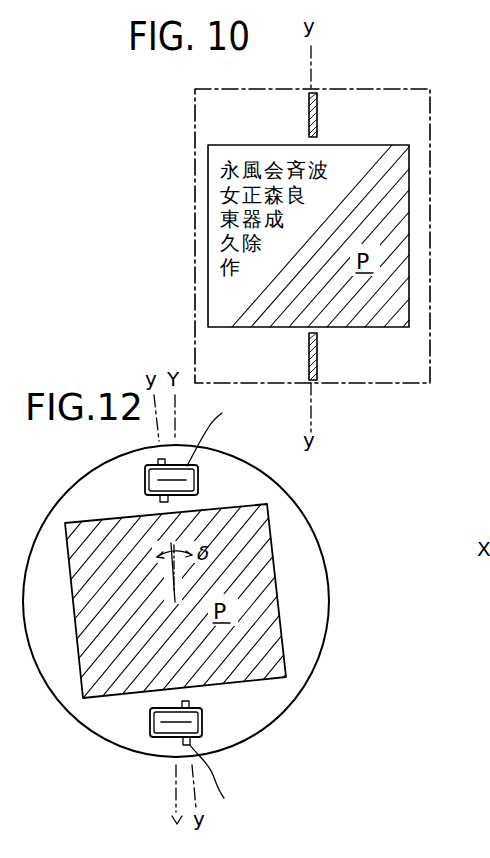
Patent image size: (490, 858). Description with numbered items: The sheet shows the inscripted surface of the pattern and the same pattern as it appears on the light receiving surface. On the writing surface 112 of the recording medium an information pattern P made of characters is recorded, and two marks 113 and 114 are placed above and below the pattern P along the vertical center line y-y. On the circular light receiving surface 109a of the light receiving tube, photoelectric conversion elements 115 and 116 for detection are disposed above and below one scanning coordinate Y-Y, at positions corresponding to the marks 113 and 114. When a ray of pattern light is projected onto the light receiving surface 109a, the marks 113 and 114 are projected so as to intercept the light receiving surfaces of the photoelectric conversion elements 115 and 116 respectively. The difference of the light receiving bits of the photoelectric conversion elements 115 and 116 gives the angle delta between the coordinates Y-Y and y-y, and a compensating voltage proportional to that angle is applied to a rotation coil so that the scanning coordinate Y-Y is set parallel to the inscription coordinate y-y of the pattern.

In FIG. 12, the light receiving surface 109a is at (318, 545).
In FIG. 10, the writing surface 112 is at (384, 88).
In FIG. 10, the mark 113 is at (309, 115).
In FIG. 12, the mark 113 is at (160, 500).
In FIG. 10, the mark 114 is at (309, 355).
In FIG. 12, the mark 114 is at (189, 702).
In FIG. 12, the photoelectric conversion element 115 is at (198, 479).
In FIG. 12, the photoelectric conversion element 116 is at (150, 722).